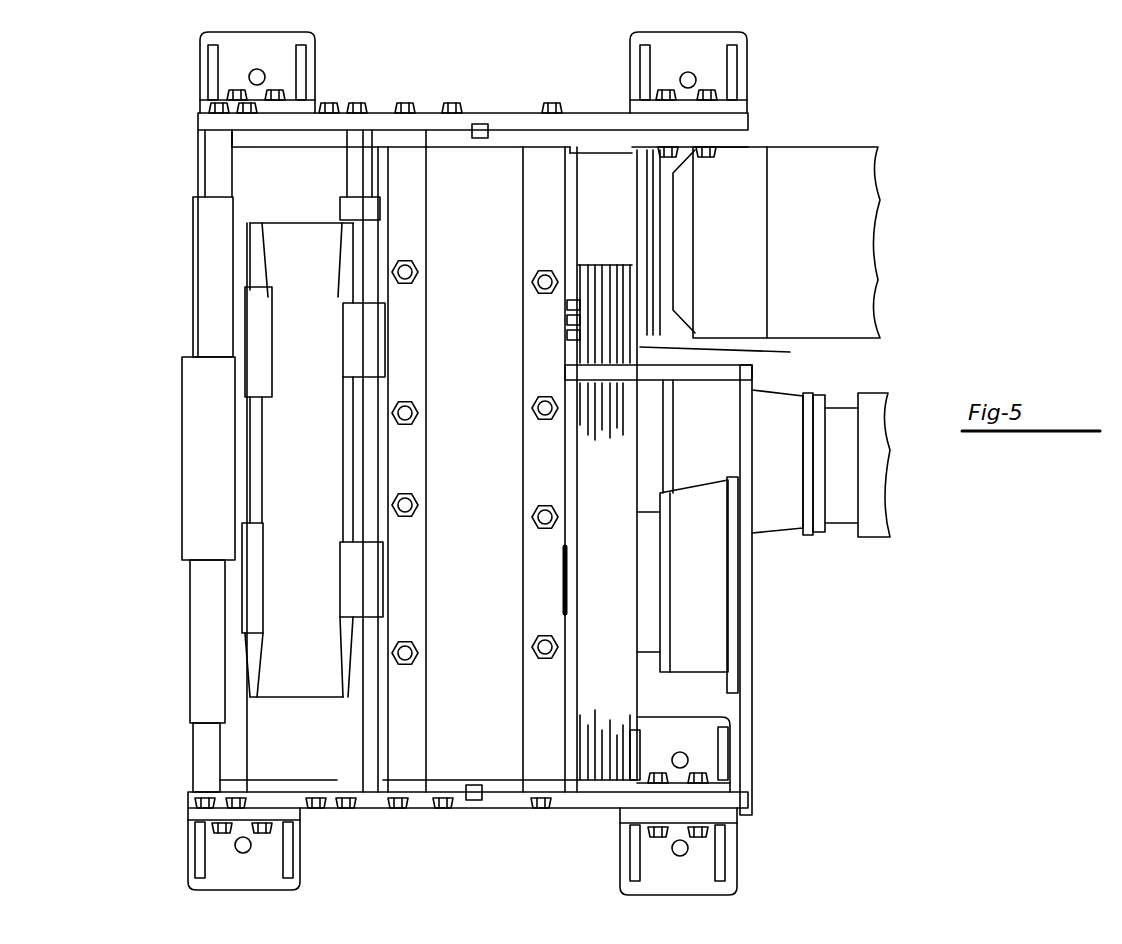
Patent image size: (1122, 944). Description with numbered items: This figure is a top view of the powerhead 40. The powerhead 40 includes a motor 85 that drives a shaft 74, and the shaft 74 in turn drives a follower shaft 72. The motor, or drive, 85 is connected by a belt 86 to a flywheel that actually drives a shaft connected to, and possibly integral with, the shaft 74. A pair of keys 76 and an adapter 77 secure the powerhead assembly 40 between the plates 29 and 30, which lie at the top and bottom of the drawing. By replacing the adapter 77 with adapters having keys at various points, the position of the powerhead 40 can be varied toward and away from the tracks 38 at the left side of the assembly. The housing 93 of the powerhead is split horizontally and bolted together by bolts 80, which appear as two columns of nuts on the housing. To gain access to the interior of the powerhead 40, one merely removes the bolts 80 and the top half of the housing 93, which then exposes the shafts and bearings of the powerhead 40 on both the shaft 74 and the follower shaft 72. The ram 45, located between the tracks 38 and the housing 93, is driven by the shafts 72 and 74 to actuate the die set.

The plate 29 is at (515, 122).
The plate 30 is at (387, 800).
The tracks 38 is at (340, 750).
The powerhead 40 is at (152, 578).
The ram 45 is at (287, 277).
The follower shaft 72 is at (355, 345).
The shaft 74 is at (360, 577).
The keys 76 is at (480, 124).
The adapter 77 is at (430, 130).
The bolts 80 is at (530, 280).
The motor 85 is at (833, 217).
The belt 86 is at (740, 355).
The housing 93 is at (405, 452).